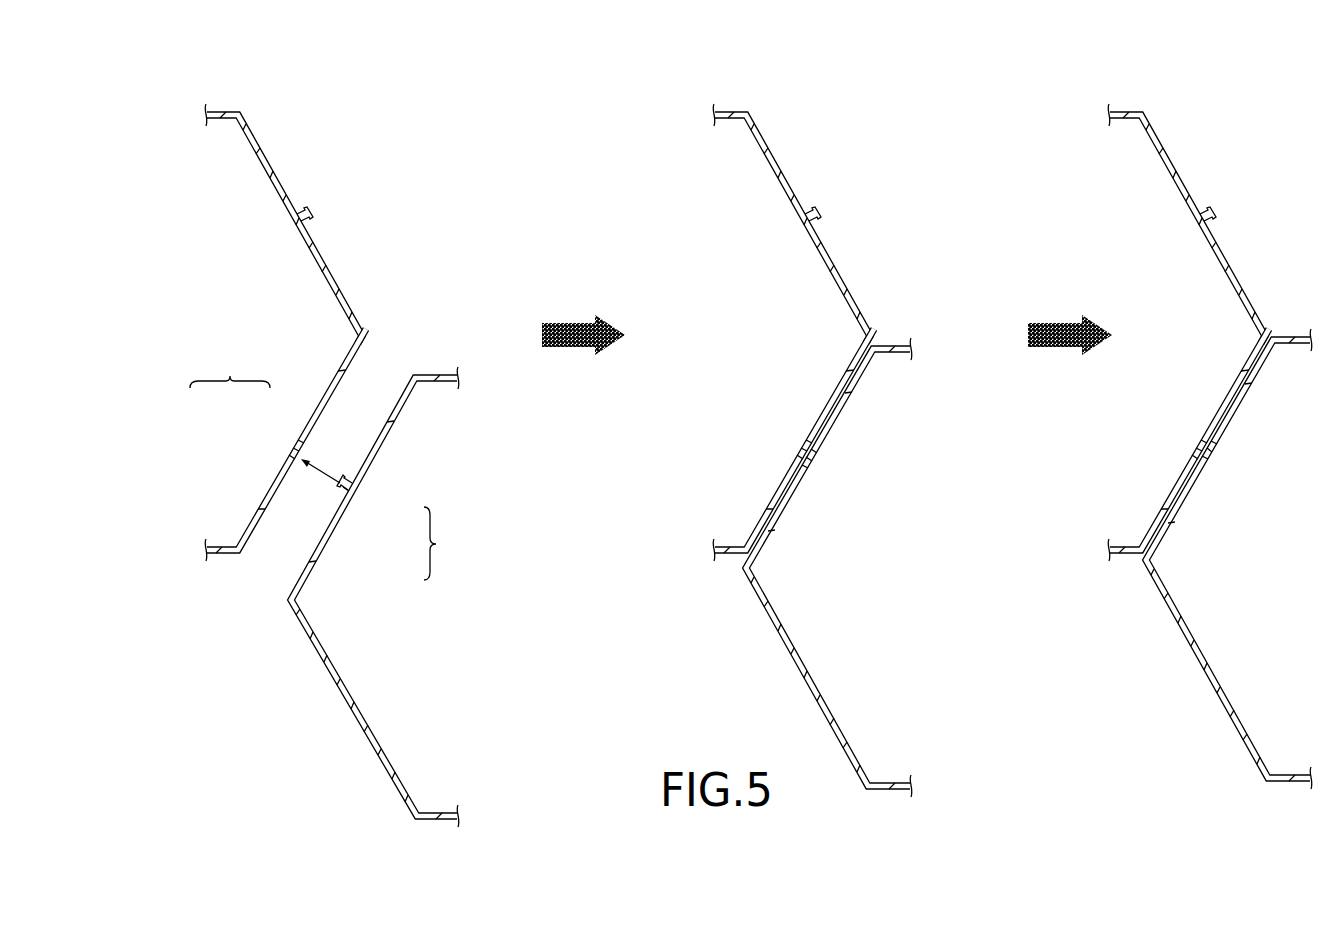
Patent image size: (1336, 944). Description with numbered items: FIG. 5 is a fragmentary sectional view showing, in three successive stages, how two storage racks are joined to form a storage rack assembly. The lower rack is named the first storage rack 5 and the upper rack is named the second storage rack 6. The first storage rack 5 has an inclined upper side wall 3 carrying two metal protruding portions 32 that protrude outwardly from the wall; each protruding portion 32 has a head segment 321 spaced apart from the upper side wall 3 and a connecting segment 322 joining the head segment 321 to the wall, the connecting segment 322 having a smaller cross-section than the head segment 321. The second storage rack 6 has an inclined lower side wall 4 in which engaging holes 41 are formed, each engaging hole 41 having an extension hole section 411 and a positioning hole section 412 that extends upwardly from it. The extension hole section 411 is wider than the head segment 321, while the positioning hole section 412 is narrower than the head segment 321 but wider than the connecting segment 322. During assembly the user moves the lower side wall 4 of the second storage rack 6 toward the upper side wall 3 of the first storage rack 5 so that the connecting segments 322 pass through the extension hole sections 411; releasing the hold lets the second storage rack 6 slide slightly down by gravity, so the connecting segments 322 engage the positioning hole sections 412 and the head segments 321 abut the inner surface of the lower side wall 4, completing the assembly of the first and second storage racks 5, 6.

The upper side wall 3 is at (393, 417).
The protruding portion 32 is at (447, 543).
The head segment 321 is at (338, 497).
The connecting segment 322 is at (353, 488).
The lower side wall 4 is at (342, 366).
The engaging hole 41 is at (230, 366).
The extension hole section 411 is at (290, 453).
The positioning hole section 412 is at (297, 443).
The first storage rack 5 is at (428, 345).
The second storage rack 6 is at (284, 150).